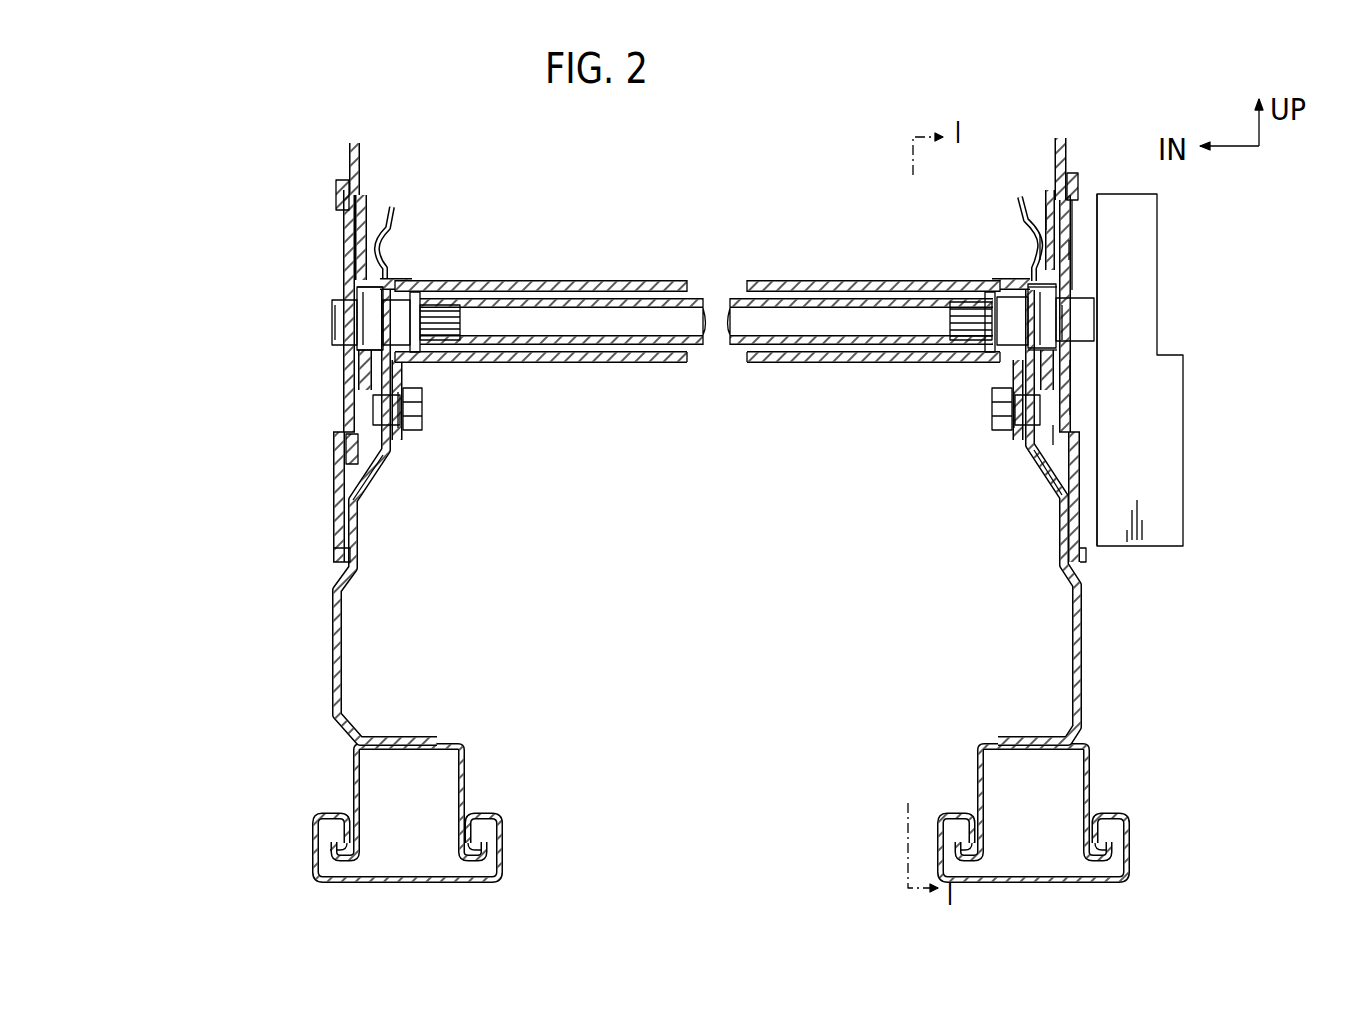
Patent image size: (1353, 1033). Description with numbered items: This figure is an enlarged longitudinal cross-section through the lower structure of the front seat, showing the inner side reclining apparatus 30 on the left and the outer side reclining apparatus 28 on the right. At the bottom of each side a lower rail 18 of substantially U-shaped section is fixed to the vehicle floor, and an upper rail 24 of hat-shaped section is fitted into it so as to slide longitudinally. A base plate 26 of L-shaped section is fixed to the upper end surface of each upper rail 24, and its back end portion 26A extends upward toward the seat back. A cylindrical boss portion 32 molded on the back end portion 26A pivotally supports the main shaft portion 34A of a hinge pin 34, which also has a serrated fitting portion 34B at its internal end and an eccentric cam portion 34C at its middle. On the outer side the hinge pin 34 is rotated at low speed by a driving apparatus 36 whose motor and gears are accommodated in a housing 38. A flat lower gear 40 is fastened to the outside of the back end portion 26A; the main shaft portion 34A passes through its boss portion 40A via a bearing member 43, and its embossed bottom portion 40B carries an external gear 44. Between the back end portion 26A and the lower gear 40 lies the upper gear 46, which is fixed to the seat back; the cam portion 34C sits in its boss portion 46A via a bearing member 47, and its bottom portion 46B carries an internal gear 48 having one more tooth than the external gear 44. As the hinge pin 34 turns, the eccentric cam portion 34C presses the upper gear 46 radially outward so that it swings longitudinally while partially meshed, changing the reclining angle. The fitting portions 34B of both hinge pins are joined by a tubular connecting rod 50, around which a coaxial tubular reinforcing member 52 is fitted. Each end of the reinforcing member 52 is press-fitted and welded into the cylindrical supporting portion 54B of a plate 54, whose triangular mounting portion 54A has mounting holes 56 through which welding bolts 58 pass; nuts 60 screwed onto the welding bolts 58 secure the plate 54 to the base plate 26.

The lower rail 18 is at (470, 876).
The upper rail 24 is at (465, 768).
The base plate 26 is at (329, 627).
The back end portion 26A is at (392, 455).
The outer side reclining apparatus 28 is at (1210, 200).
The inner side reclining apparatus 30 is at (333, 218).
The boss portion 32 is at (415, 280).
The hinge pin 34 is at (330, 316).
The main shaft portion 34A is at (338, 330).
The fitting portion 34B is at (455, 324).
The cam portion 34C is at (360, 335).
The driving apparatus 36 is at (1184, 490).
The housing 38 is at (1180, 524).
The lower gear 40 is at (333, 526).
The boss portion 40A is at (1082, 378).
The bottom portion 40B is at (1082, 240).
The bearing member 43 is at (348, 290).
The external gear 44 is at (1085, 215).
The upper gear 46 is at (362, 138).
The boss portion 46A is at (1040, 235).
The bottom portion 46B is at (1046, 208).
The bearing member 47 is at (372, 268).
The internal gear 48 is at (1074, 200).
The connecting rod 50 is at (698, 292).
The reinforcing member 52 is at (665, 360).
The plate 54 is at (405, 266).
The mounting portion 54A is at (405, 375).
The supporting portion 54B is at (418, 272).
The mounting hole 56 is at (422, 405).
The welding bolt 58 is at (382, 460).
The nut 60 is at (403, 410).